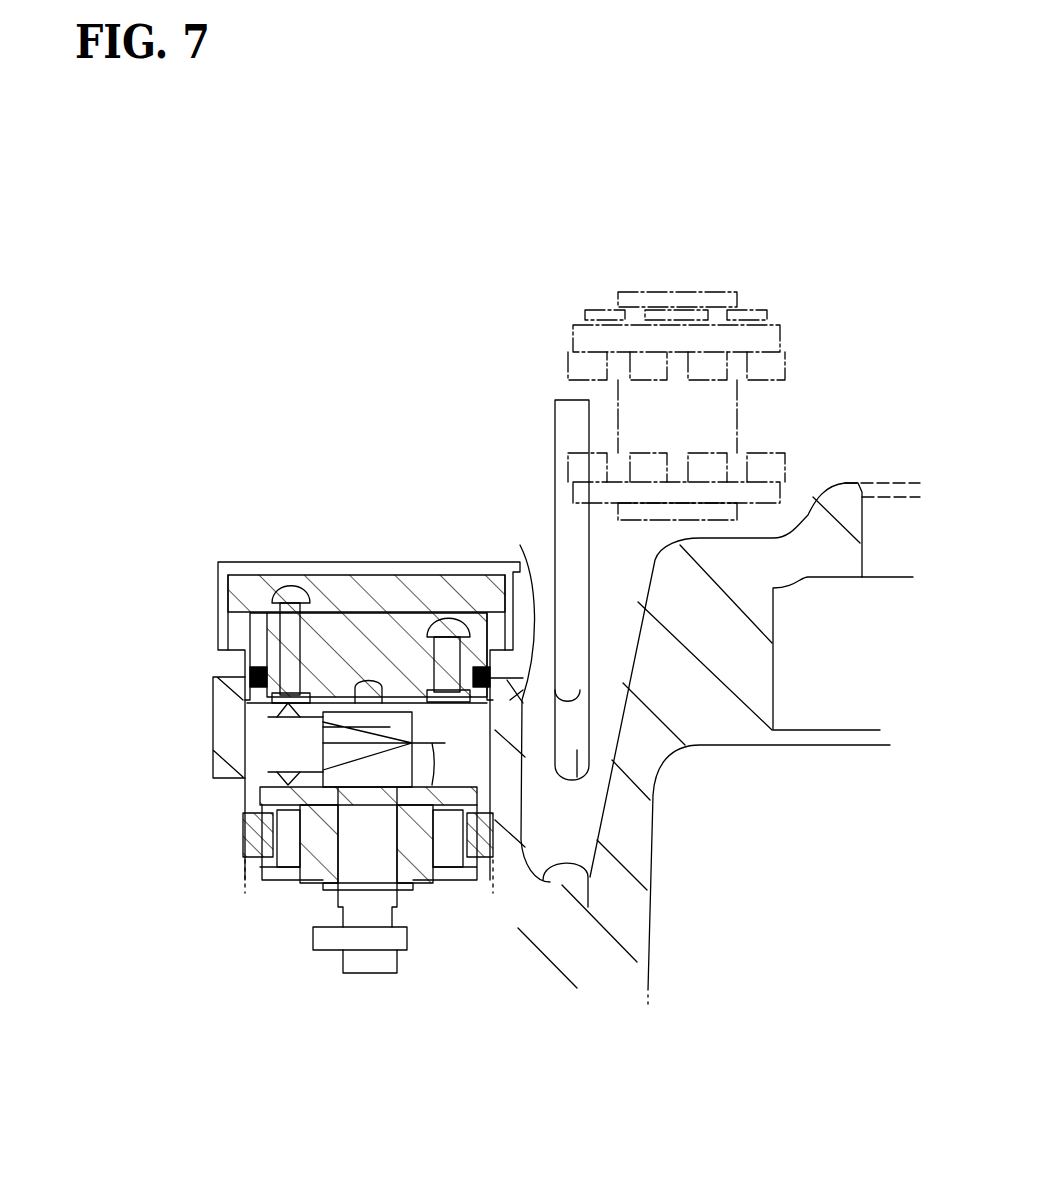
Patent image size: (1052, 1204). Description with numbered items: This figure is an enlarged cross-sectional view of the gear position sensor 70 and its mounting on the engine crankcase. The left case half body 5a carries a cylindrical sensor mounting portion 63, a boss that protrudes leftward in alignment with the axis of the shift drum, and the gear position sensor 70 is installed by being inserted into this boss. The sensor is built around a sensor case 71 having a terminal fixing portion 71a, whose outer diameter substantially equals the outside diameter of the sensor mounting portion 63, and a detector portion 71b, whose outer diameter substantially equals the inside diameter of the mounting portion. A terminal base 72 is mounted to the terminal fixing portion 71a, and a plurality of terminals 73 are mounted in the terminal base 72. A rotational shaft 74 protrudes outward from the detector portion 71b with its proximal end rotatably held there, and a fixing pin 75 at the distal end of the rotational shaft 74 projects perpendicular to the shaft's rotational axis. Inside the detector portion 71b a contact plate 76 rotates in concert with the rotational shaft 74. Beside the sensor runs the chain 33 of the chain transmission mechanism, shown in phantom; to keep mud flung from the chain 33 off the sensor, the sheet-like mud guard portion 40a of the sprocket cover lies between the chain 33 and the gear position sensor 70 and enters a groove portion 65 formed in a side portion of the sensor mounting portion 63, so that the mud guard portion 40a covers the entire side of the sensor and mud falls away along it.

The chain 33 is at (624, 338).
The mud guard portion 40a is at (578, 770).
The left case half body 5a is at (832, 500).
The sensor mounting portion 63 is at (520, 545).
The groove portion 65 is at (588, 907).
The gear position sensor 70 is at (355, 480).
The sensor case 71 is at (88, 703).
The terminal fixing portion 71a is at (218, 638).
The detector portion 71b is at (238, 778).
The terminal base 72 is at (222, 614).
The terminals 73 is at (290, 605).
The rotational shaft 74 is at (355, 880).
The fixing pin 75 is at (328, 935).
The contact plate 76 is at (430, 860).